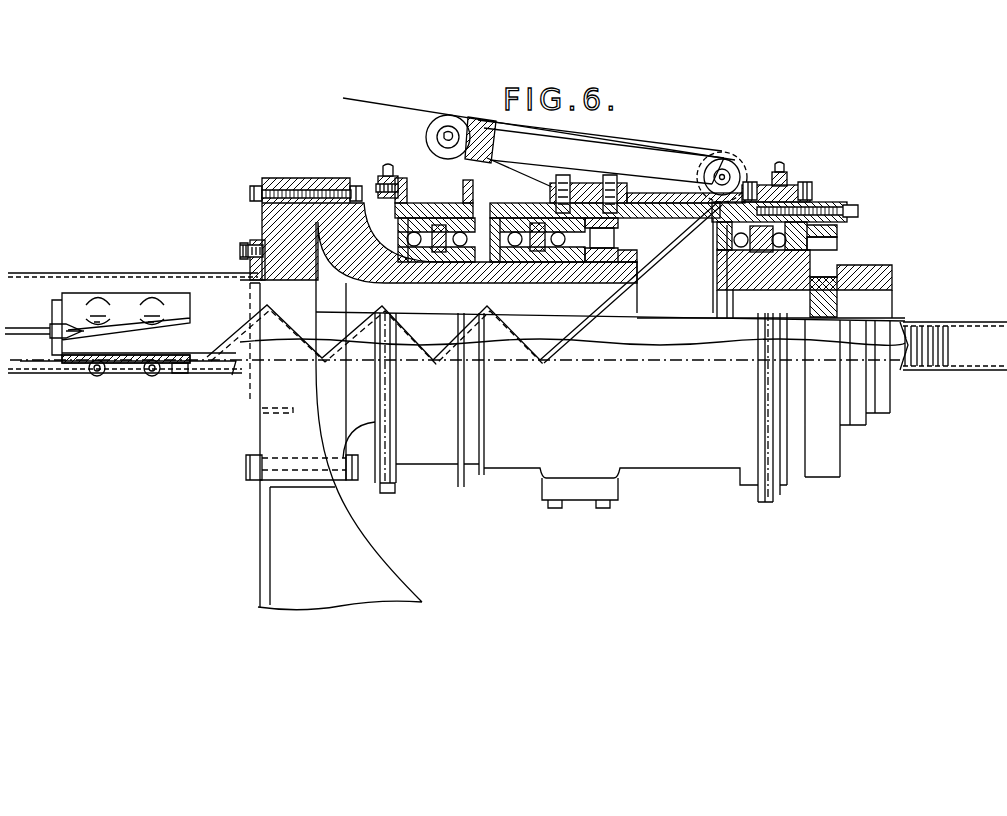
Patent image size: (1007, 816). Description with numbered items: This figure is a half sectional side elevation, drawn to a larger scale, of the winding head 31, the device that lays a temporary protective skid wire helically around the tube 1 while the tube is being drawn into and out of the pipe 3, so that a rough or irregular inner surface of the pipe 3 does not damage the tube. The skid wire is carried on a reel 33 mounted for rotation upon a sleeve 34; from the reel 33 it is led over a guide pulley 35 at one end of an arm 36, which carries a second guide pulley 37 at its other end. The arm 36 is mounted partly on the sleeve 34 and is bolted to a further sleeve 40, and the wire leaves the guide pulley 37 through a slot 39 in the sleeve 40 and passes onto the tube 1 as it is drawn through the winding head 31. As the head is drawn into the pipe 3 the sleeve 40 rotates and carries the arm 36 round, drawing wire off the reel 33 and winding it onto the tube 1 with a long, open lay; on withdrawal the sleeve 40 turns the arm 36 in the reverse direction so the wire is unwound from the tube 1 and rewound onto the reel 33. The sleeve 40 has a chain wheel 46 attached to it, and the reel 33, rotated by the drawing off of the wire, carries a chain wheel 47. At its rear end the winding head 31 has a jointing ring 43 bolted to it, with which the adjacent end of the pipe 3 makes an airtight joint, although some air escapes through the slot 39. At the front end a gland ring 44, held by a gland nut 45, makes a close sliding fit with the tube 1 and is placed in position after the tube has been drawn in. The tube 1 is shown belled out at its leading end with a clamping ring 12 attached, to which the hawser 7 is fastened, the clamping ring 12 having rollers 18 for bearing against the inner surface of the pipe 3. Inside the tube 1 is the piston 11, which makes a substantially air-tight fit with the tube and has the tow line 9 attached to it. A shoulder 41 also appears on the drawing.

The tube 1 is at (215, 320).
The pipe 3 is at (192, 380).
The hawser 7 is at (20, 342).
The tow line 9 is at (905, 348).
The piston 11 is at (940, 340).
The clamping ring 12 is at (75, 360).
The rollers 18 is at (150, 300).
The winding head 31 is at (672, 470).
The reel 33 is at (433, 216).
The sleeve 34 is at (502, 284).
The guide pulley 35 is at (453, 122).
The arm 36 is at (615, 156).
The guide pulley 37 is at (740, 162).
The slot 39 is at (606, 269).
The sleeve 40 is at (654, 198).
The shoulder 41 is at (638, 270).
The jointing ring 43 is at (258, 348).
The gland ring 44 is at (840, 316).
The gland nut 45 is at (893, 281).
The chain wheel 46 is at (787, 183).
The chain wheel 47 is at (383, 493).